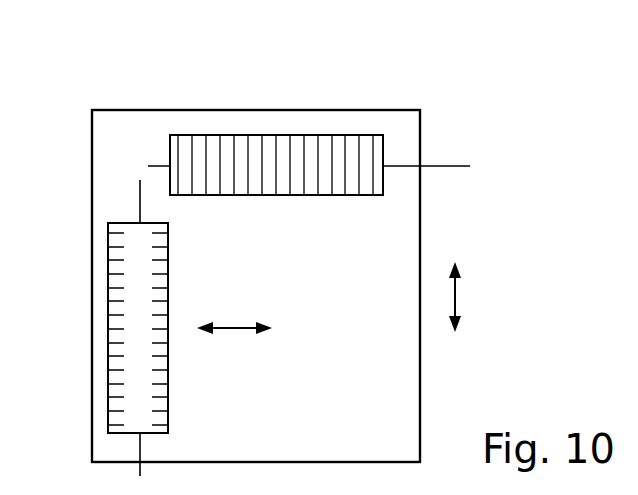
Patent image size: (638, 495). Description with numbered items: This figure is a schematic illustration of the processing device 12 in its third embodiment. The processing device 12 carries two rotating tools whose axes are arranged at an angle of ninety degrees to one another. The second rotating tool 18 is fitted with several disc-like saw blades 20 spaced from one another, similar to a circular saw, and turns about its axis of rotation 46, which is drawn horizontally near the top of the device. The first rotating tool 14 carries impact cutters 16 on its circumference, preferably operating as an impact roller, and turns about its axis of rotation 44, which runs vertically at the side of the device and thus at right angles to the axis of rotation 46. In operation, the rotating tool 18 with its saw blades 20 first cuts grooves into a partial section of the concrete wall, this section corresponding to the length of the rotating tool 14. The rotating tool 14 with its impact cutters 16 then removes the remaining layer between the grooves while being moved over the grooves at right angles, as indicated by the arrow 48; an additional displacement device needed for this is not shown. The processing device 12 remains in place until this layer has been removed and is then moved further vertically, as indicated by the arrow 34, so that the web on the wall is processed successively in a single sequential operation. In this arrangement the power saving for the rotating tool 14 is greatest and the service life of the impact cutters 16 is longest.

The processing device 12 is at (326, 101).
The first rotating tool 14 is at (100, 388).
The impact cutters 16 is at (118, 343).
The second rotating tool 18 is at (239, 128).
The saw blades 20 is at (206, 157).
The arrow 34 is at (457, 302).
The axis of rotation 44 is at (141, 445).
The axis of rotation 46 is at (449, 162).
The arrow 48 is at (239, 327).